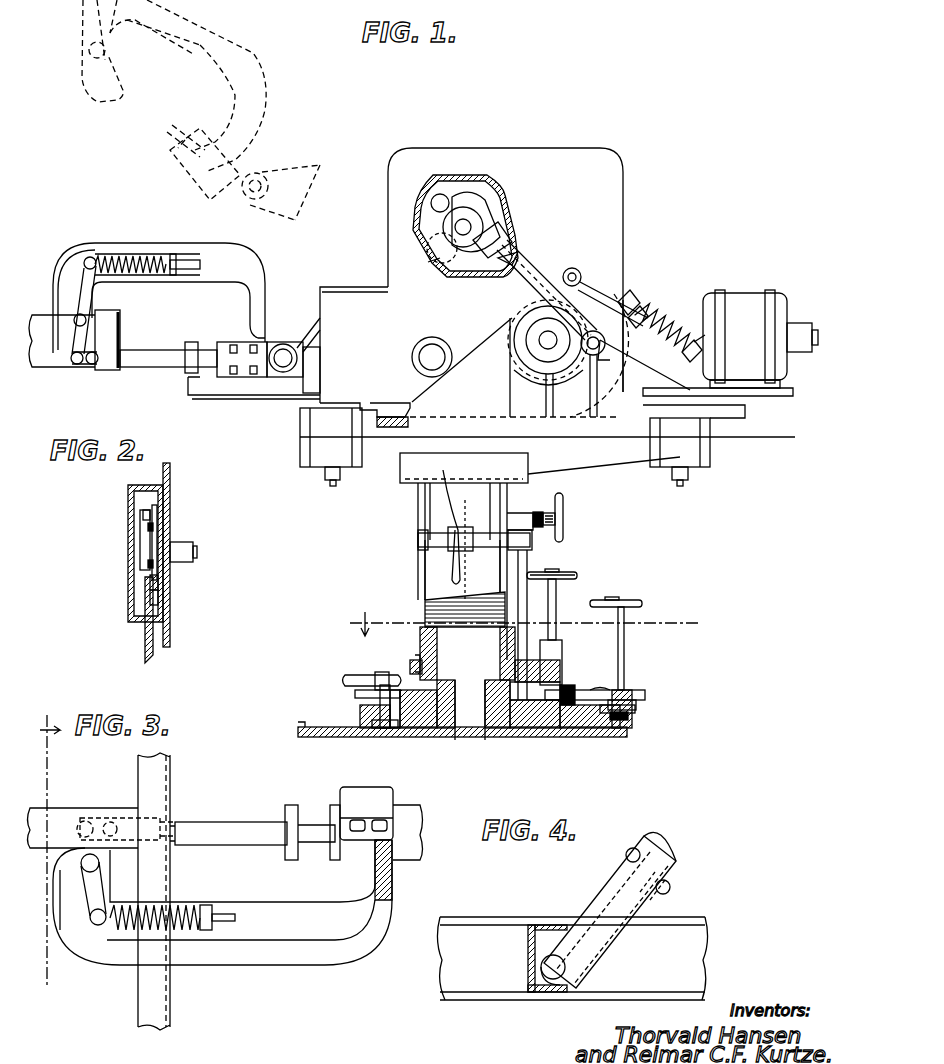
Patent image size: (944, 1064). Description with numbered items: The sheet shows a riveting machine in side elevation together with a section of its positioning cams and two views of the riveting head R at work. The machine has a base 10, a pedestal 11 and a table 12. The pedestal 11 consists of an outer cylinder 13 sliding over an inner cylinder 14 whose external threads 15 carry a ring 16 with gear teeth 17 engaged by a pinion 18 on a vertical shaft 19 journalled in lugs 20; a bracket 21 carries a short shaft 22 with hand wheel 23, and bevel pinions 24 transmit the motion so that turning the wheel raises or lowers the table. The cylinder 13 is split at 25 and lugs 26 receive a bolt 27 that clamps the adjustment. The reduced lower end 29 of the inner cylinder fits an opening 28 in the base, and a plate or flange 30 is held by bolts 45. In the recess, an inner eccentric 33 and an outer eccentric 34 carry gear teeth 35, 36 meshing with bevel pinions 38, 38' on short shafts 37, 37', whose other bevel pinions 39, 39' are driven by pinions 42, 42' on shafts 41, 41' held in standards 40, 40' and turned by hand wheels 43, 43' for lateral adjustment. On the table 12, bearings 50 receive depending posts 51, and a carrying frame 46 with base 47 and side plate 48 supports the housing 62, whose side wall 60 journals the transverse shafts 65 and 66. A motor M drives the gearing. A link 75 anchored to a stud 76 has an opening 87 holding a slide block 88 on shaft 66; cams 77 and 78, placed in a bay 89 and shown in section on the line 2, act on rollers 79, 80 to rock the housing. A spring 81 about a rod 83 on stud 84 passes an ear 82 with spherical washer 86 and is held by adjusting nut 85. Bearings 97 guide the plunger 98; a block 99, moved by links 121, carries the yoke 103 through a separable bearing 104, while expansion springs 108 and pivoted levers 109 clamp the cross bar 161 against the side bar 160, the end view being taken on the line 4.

In FIG. 1, the side wall 60 is at (535, 152).
In FIG. 2, the side wall 60 is at (168, 512).
In FIG. 1, the housing 62 is at (635, 272).
In FIG. 1, the section line 2 is at (431, 191).
In FIG. 1, the cam 77 is at (456, 268).
In FIG. 2, the cam 77 is at (138, 553).
In FIG. 1, the cam 78 is at (495, 212).
In FIG. 2, the cam 78 is at (158, 545).
In FIG. 1, the transverse shaft 66 is at (466, 218).
In FIG. 2, the transverse shaft 66 is at (195, 552).
In FIG. 1, the anti-friction roller 79 is at (443, 196).
In FIG. 2, the anti-friction roller 79 is at (142, 518).
In FIG. 1, the elongated opening 87 is at (505, 238).
In FIG. 2, the elongated opening 87 is at (152, 580).
In FIG. 1, the anti-friction roller 80 is at (516, 252).
In FIG. 2, the anti-friction roller 80 is at (160, 600).
In FIG. 1, the slide block 88 is at (430, 256).
In FIG. 2, the slide block 88 is at (152, 570).
In FIG. 1, the bay 89 is at (436, 268).
In FIG. 2, the bay 89 is at (130, 590).
In FIG. 1, the link 75 is at (527, 290).
In FIG. 2, the link 75 is at (145, 628).
In FIG. 1, the carrying frame 46 is at (512, 352).
In FIG. 1, the side plate 48 is at (490, 352).
In FIG. 1, the stud 76 is at (600, 356).
In FIG. 1, the fixed shaft 65 is at (412, 357).
In FIG. 1, the base 47 is at (396, 405).
In FIG. 1, the links 121 is at (314, 345).
In FIG. 1, the stud 84 is at (574, 268).
In FIG. 1, the rod 83 is at (608, 295).
In FIG. 1, the ear 82 is at (628, 292).
In FIG. 1, the spherical washer 86 is at (641, 308).
In FIG. 1, the counterbalancing expansion spring 81 is at (662, 322).
In FIG. 1, the adjusting nut 85 is at (647, 365).
In FIG. 1, the motor M is at (730, 343).
In FIG. 1, the yoke 103 is at (240, 292).
In FIG. 3, the yoke 103 is at (290, 920).
In FIG. 4, the yoke 103 is at (670, 856).
In FIG. 1, the expansion springs 108 is at (112, 256).
In FIG. 3, the expansion springs 108 is at (180, 905).
In FIG. 4, the expansion springs 108 is at (626, 857).
In FIG. 1, the riveting head R is at (150, 227).
In FIG. 3, the riveting head R is at (240, 880).
In FIG. 1, the pivoted levers 109 is at (80, 288).
In FIG. 3, the pivoted levers 109 is at (92, 908).
In FIG. 4, the pivoted levers 109 is at (548, 952).
In FIG. 1, the side bar 160 is at (122, 332).
In FIG. 3, the side bar 160 is at (160, 788).
In FIG. 4, the side bar 160 is at (492, 925).
In FIG. 1, the cross bar 161 is at (62, 362).
In FIG. 3, the cross bar 161 is at (85, 818).
In FIG. 4, the cross bar 161 is at (528, 958).
In FIG. 1, the plunger or hammer 98 is at (150, 355).
In FIG. 3, the plunger or hammer 98 is at (192, 822).
In FIG. 1, the extended bearings 97 is at (192, 343).
In FIG. 3, the extended bearings 97 is at (292, 805).
In FIG. 1, the separable bearing 104 is at (225, 378).
In FIG. 3, the separable bearing 104 is at (380, 806).
In FIG. 1, the block 99 is at (280, 378).
In FIG. 3, the block 99 is at (412, 858).
In FIG. 1, the table 12 is at (547, 455).
In FIG. 1, the bearing 50 is at (300, 442).
In FIG. 1, the depending post 51 is at (332, 480).
In FIG. 1, the pedestal 11 is at (418, 496).
In FIG. 1, the outer cylinder 13 is at (425, 600).
In FIG. 1, the lugs 26 is at (472, 550).
In FIG. 1, the split 25 is at (467, 505).
In FIG. 1, the bolt 27 is at (418, 540).
In FIG. 1, the bracket 21 is at (522, 513).
In FIG. 1, the bevel pinions 24 is at (540, 512).
In FIG. 1, the short shaft 22 is at (565, 515).
In FIG. 1, the hand wheel 23 is at (565, 525).
In FIG. 1, the lugs 20 is at (540, 640).
In FIG. 1, the vertical shaft 19 is at (548, 572).
In FIG. 1, the hand wheel 43 is at (574, 560).
In FIG. 1, the shaft 41 is at (572, 608).
In FIG. 1, the hand wheel 43' is at (632, 588).
In FIG. 1, the shaft 41' is at (635, 648).
In FIG. 1, the base 10 is at (634, 752).
In FIG. 1, the inner cylinder 14 is at (437, 640).
In FIG. 1, the screw threads 15 is at (490, 620).
In FIG. 1, the gear teeth 17 is at (418, 660).
In FIG. 1, the internally screw-threaded ring 16 is at (410, 666).
In FIG. 1, the opening 28 is at (448, 738).
In FIG. 1, the gear teeth 35 is at (437, 705).
In FIG. 1, the bevel pinions 38 is at (489, 688).
In FIG. 1, the short shafts 37 is at (509, 705).
In FIG. 1, the inner eccentric 33 is at (428, 738).
In FIG. 1, the gear teeth 36 is at (405, 738).
In FIG. 1, the bolts 45 is at (383, 730).
In FIG. 1, the plate or flange 30 is at (355, 693).
In FIG. 1, the reduced lower end 29 is at (490, 738).
In FIG. 1, the outer eccentric 34 is at (492, 770).
In FIG. 1, the bevel pinion 38' is at (521, 757).
In FIG. 1, the short shaft 37' is at (590, 740).
In FIG. 1, the pinion 18 is at (550, 655).
In FIG. 1, the standard 40 is at (559, 657).
In FIG. 1, the bevel pinion 42 is at (595, 680).
In FIG. 1, the bevel pinion 39 is at (627, 685).
In FIG. 1, the standard 40' is at (667, 702).
In FIG. 1, the bevel pinion 42' is at (639, 705).
In FIG. 1, the bevel pinion 39' is at (644, 721).
In FIG. 3, the section line 4 is at (47, 854).